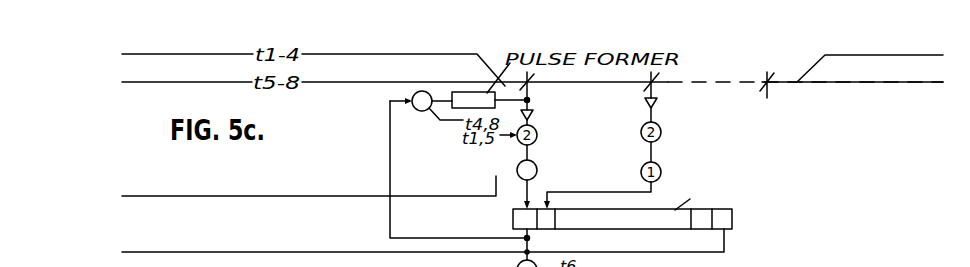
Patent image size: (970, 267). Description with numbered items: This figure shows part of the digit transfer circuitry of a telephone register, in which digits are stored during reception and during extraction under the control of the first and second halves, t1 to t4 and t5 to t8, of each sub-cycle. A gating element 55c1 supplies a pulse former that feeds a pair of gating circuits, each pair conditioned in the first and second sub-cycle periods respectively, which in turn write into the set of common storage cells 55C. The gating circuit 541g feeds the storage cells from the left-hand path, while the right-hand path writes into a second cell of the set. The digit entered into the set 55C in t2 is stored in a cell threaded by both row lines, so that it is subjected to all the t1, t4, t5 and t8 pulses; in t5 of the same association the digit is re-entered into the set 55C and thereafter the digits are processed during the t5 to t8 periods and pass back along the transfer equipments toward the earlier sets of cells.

The input gate of pulse former circuit 55c1 is at (386, 101).
The gating circuit feeding storage cells 541g is at (511, 170).
The set of common storage cells 55C is at (683, 217).